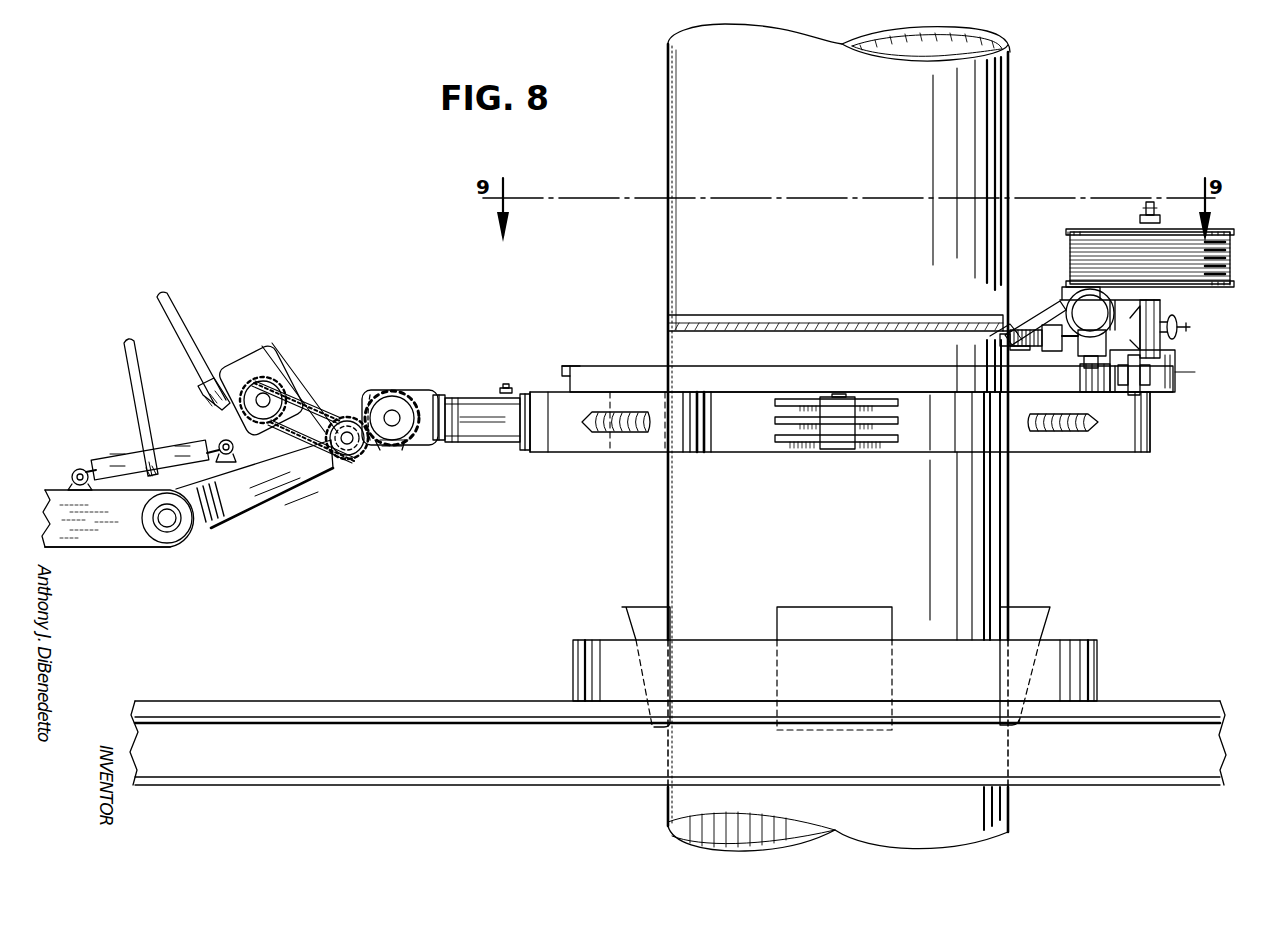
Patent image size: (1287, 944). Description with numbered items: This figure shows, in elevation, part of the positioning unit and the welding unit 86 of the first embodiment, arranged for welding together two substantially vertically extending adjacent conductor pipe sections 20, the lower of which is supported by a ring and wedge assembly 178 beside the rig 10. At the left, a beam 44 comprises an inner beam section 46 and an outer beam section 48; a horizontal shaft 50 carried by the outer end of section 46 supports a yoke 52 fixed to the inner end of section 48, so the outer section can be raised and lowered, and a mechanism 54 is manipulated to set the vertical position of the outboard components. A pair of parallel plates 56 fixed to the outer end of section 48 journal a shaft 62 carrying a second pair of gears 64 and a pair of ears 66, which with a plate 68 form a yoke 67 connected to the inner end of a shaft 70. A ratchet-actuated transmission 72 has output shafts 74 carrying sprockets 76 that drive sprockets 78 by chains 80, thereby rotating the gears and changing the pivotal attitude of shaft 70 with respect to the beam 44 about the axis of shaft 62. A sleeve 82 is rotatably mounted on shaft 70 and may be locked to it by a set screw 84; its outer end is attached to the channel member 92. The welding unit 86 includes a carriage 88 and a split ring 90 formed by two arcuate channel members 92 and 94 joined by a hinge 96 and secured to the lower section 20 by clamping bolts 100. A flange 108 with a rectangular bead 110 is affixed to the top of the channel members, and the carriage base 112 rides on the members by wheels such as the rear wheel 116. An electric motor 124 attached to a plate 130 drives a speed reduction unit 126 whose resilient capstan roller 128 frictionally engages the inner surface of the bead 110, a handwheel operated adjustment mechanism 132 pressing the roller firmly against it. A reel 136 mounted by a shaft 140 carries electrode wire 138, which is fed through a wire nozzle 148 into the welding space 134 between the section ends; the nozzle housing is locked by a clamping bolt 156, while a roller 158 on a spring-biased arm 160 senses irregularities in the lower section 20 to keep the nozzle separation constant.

The rig 10 is at (360, 690).
The conductor pipe section 20 is at (685, 132).
The beam 44 is at (85, 555).
The inner beam section 46 is at (120, 548).
The outer beam section 48 is at (290, 485).
The shaft 50 is at (170, 530).
The yoke 52 is at (225, 518).
The mechanism 54 is at (124, 448).
The parallel plates 56 is at (394, 447).
The shaft 62 is at (352, 418).
The second pair of gears 64 is at (374, 400).
The ears 66 is at (396, 395).
The yoke 67 is at (428, 386).
The plate 68 is at (436, 443).
The shaft 70 is at (441, 397).
The ratchet-actuated transmission 72 is at (252, 340).
The output shafts 74 is at (270, 424).
The sprockets 76 is at (523, 455).
The sprockets 78 is at (348, 455).
The chains 80 is at (312, 398).
The sleeve 82 is at (468, 445).
The set screw 84 is at (505, 384).
The welding unit 86 is at (1127, 242).
The carriage 88 is at (1185, 380).
The split ring 90 is at (540, 385).
The arcuate channel member 92 is at (566, 455).
The arcuate channel member 94 is at (1120, 458).
The hinge 96 is at (836, 452).
The clamping bolts 100 is at (628, 434).
The flange 108 is at (632, 380).
The rectangular bead 110 is at (585, 366).
The carriage base 112 is at (1175, 390).
The rear wheel 116 is at (1140, 388).
The electric motor 124 is at (1068, 302).
The speed reduction unit 126 is at (1175, 356).
The resilient capstan roller 128 is at (1096, 393).
The plate 130 is at (1068, 349).
The handwheel operated adjustment mechanism 132 is at (1190, 328).
The welding space 134 is at (780, 314).
The reel 136 is at (1078, 226).
The electrode wire 138 is at (1070, 241).
The shaft 140 is at (1160, 306).
The wire nozzle 148 is at (1060, 300).
The clamping bolt 156 is at (998, 340).
The roller 158 is at (1010, 348).
The arm 160 is at (1010, 325).
The ring and wedge assembly 178 is at (572, 625).